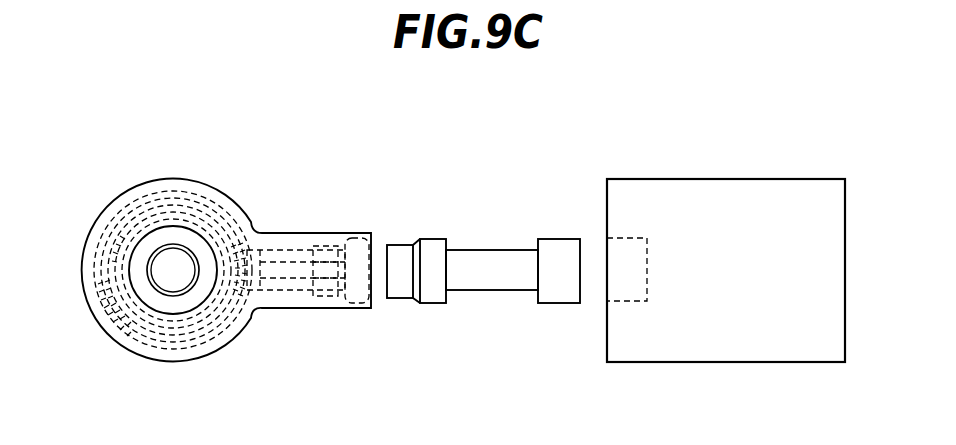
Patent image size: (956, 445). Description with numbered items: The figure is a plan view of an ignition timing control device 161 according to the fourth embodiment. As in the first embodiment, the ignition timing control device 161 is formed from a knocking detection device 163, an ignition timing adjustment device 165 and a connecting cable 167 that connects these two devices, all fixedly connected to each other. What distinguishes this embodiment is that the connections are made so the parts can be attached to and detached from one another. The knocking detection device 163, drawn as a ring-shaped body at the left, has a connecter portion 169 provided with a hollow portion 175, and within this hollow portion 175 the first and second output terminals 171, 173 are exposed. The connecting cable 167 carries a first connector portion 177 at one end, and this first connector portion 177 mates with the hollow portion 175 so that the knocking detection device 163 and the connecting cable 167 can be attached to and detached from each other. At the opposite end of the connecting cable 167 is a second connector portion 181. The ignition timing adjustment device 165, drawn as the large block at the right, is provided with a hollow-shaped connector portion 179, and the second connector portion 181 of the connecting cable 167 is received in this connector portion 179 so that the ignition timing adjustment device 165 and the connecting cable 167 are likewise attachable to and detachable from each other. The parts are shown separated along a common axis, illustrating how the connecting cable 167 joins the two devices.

The ignition timing control device 161 is at (513, 147).
The knocking detection device 163 is at (212, 148).
The ignition timing adjustment device 165 is at (736, 148).
The connecting cable 167 is at (490, 258).
The connecter portion 169 is at (284, 298).
The first output terminal 171 is at (327, 248).
The second output terminal 173 is at (327, 287).
The hollow portion 175 is at (358, 257).
The first connector portion 177 is at (431, 292).
The hollow-shaped connector portion 179 is at (627, 248).
The second connector portion 181 is at (560, 246).